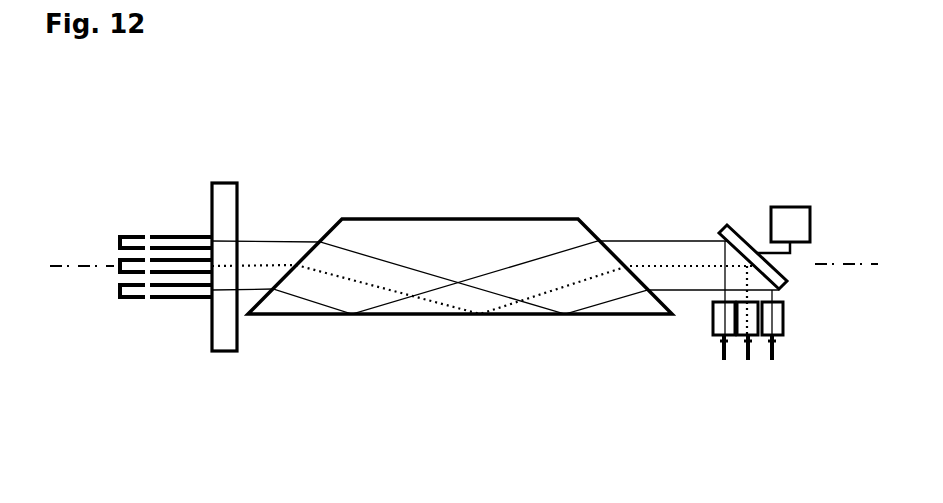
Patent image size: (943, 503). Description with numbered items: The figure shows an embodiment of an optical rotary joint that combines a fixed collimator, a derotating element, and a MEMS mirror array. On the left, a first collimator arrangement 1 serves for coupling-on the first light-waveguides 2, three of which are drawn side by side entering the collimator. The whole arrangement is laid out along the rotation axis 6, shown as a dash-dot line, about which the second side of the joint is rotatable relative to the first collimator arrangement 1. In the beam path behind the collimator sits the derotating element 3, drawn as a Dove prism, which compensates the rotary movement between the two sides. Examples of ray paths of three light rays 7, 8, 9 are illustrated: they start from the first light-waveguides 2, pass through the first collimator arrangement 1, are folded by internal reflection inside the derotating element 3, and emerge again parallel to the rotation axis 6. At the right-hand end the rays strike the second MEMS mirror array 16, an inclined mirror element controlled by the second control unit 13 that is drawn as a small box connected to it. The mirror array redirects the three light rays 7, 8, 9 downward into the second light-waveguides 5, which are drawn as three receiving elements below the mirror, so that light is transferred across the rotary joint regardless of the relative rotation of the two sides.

The first collimator arrangement 1 is at (220, 177).
The first light-waveguides 2 is at (122, 235).
The derotating element 3 is at (562, 196).
The second light-waveguides 5 is at (708, 348).
The rotation axis 6 is at (97, 278).
The light ray 7 is at (243, 238).
The light ray 8 is at (257, 262).
The light ray 9 is at (262, 282).
The second control unit 13 is at (783, 230).
The second MEMS mirror array 16 is at (742, 236).